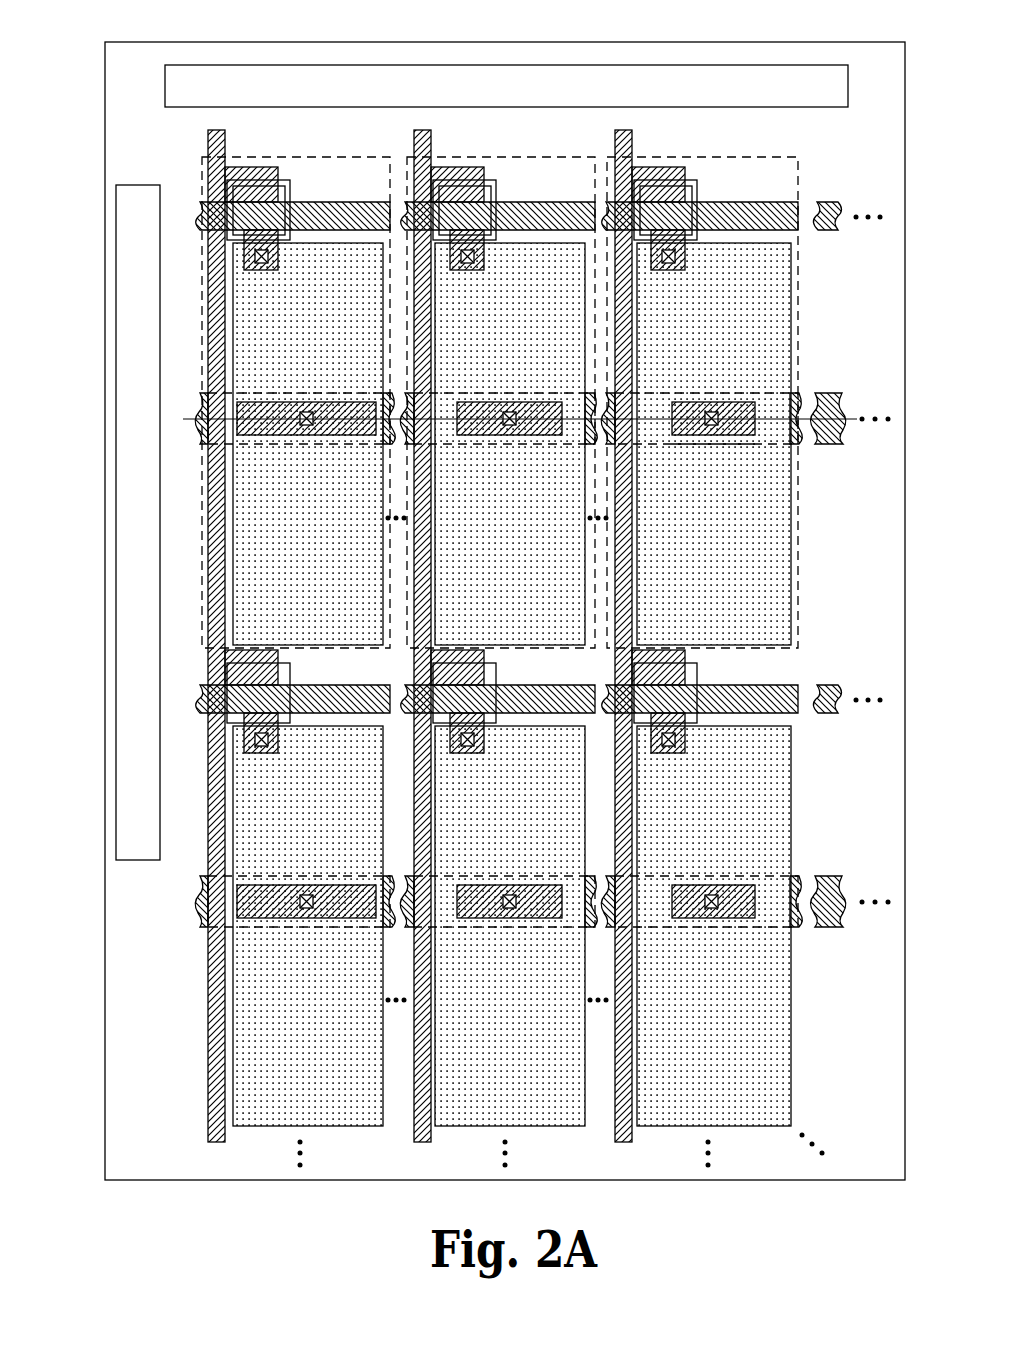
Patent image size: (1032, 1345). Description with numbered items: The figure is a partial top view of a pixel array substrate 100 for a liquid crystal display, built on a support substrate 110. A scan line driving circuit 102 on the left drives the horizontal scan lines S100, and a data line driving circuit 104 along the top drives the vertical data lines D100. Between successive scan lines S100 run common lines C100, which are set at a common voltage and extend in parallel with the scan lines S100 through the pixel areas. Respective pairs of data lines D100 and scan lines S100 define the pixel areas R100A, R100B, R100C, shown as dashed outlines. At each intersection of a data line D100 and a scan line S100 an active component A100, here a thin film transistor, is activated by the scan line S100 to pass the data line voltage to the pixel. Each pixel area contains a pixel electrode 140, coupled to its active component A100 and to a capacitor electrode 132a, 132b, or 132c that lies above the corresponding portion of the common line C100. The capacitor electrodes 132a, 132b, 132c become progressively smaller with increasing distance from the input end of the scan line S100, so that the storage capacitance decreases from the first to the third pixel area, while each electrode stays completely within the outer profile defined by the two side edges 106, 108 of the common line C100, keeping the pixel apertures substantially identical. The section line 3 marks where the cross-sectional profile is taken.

The pixel array substrate 100 is at (467, 622).
The scan line driving circuit 102 is at (133, 192).
The data line driving circuit 104 is at (723, 68).
The side edge of the common line 106 is at (742, 395).
The side edge of the common line 108 is at (725, 442).
The support substrate 110 is at (830, 1183).
The capacitor electrode 132a is at (270, 404).
The capacitor electrode 132b is at (483, 404).
The capacitor electrode 132c is at (697, 404).
The pixel electrode 140 is at (775, 553).
The data line D100 is at (213, 1122).
The scan line S100 is at (832, 201).
The common line C100 is at (840, 393).
The active component A100 is at (688, 160).
The pixel area R100A is at (328, 157).
The pixel area R100B is at (528, 157).
The pixel area R100C is at (735, 156).
The section line 3 is at (187, 470).